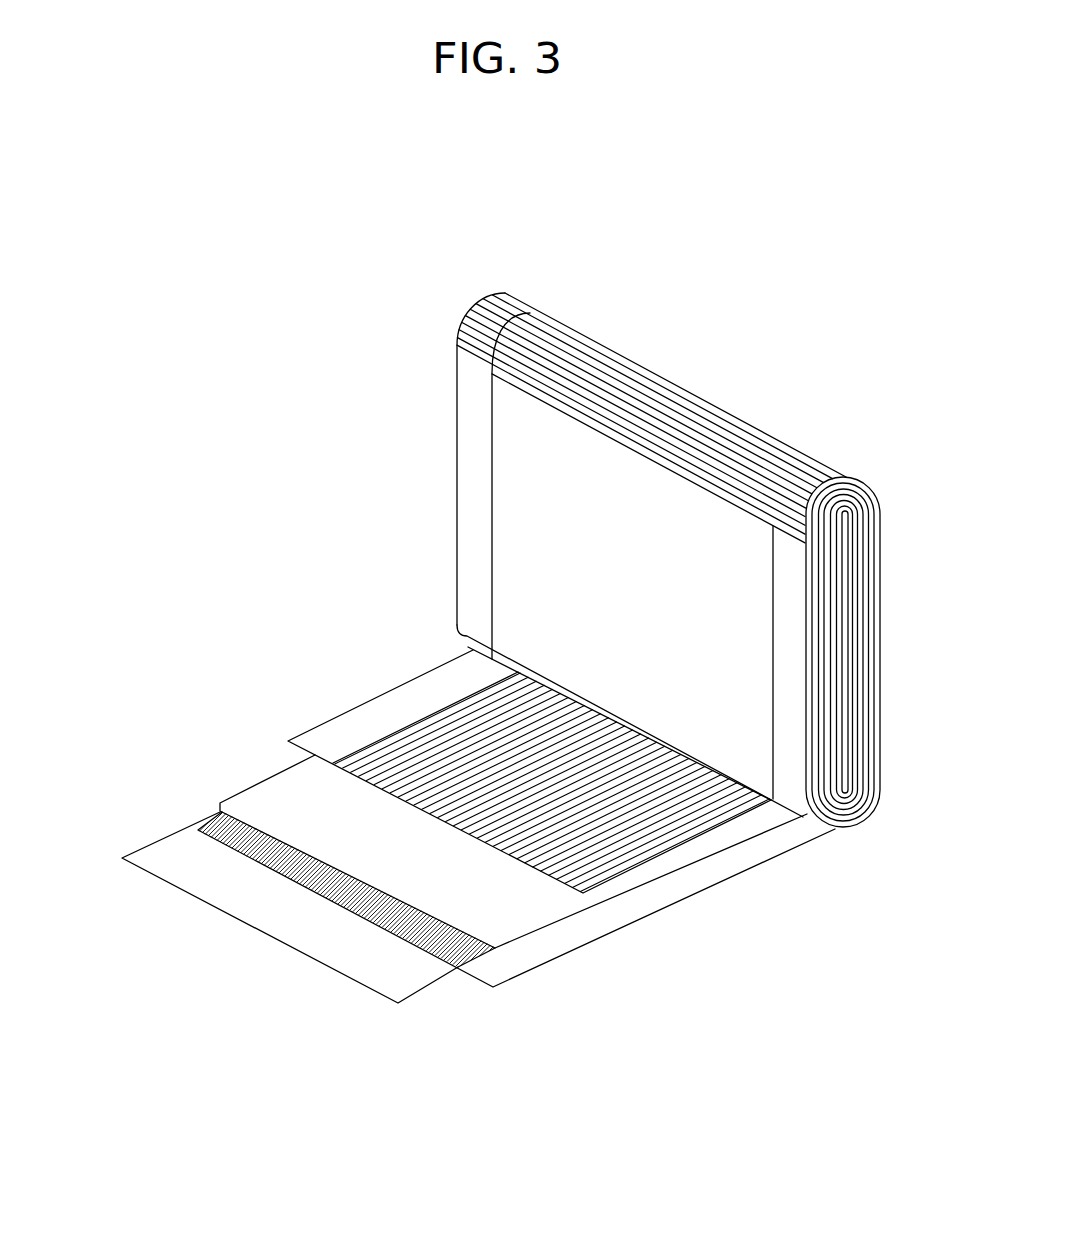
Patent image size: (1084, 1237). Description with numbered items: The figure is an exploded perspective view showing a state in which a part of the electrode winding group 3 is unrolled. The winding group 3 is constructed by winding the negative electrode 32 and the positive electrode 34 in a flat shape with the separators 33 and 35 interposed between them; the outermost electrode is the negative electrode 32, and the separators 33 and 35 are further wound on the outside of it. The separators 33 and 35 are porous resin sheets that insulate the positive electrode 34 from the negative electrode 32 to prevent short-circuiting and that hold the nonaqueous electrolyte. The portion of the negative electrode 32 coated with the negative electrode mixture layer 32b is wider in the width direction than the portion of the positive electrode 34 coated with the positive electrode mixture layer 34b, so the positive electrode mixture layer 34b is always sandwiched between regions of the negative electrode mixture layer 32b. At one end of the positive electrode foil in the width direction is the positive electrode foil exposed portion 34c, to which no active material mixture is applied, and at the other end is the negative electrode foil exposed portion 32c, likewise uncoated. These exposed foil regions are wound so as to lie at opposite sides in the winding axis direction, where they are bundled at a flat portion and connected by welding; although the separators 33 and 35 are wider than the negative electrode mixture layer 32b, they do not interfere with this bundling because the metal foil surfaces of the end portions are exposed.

The winding group 3 is at (648, 418).
The negative electrode 32 is at (337, 897).
The negative electrode mixture layer 32b is at (204, 822).
The negative electrode foil exposed portion 32c is at (792, 650).
The separator 33 is at (268, 778).
The positive electrode 34 is at (713, 812).
The positive electrode mixture layer 34b is at (627, 857).
The positive electrode foil exposed portion 34c is at (470, 478).
The separator 35 is at (137, 836).